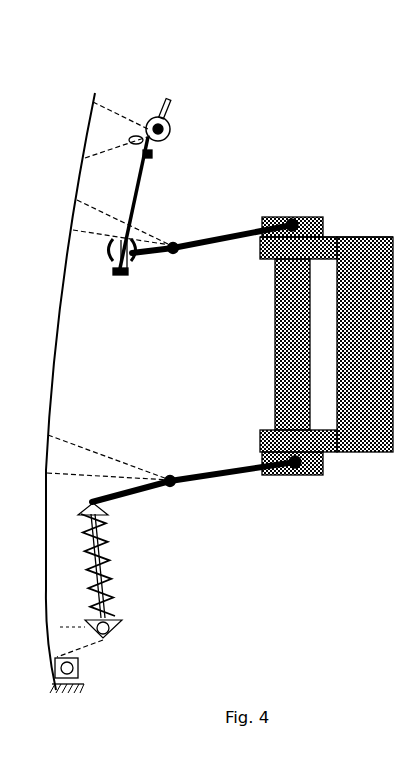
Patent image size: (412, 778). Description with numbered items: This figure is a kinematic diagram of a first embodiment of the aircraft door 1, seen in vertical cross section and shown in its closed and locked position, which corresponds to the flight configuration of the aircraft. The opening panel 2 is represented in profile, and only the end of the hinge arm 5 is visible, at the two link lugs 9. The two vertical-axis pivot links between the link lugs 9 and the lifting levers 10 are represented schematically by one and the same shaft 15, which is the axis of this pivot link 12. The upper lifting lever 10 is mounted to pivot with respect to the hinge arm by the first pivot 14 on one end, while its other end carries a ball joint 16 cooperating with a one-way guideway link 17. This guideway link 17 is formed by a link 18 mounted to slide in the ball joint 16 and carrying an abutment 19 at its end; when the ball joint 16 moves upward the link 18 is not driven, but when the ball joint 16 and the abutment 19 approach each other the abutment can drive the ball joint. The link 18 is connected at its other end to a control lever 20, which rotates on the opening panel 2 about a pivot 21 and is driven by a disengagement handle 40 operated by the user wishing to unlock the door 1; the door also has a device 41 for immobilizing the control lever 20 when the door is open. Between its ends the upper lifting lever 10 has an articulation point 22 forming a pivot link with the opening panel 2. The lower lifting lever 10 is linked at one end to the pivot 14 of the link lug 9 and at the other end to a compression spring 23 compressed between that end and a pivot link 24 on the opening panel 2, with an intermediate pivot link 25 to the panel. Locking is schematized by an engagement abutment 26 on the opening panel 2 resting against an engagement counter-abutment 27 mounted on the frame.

The aircraft door 1 is at (205, 158).
The opening panel 2 is at (65, 298).
The hinge arm 5 is at (368, 433).
The link lugs 9 is at (259, 245).
The lifting levers 10 is at (201, 228).
The pivot link 12 is at (313, 217).
The first pivot 14 is at (288, 217).
The shaft 15 is at (275, 372).
The ball joint 16 is at (138, 270).
The one-way guideway link 17 is at (108, 257).
The link 18 is at (149, 152).
The abutment 19 is at (114, 285).
The control lever 20 is at (182, 155).
The pivot 21 is at (155, 117).
The articulation point 22 is at (171, 240).
The compression spring 23 is at (113, 555).
The pivot link 24 is at (107, 642).
The pivot link 25 is at (173, 490).
The engagement abutment 26 is at (80, 663).
The engagement counter-abutment 27 is at (57, 692).
The disengagement handle 40 is at (170, 103).
The device for immobilizing the control lever 41 is at (150, 120).